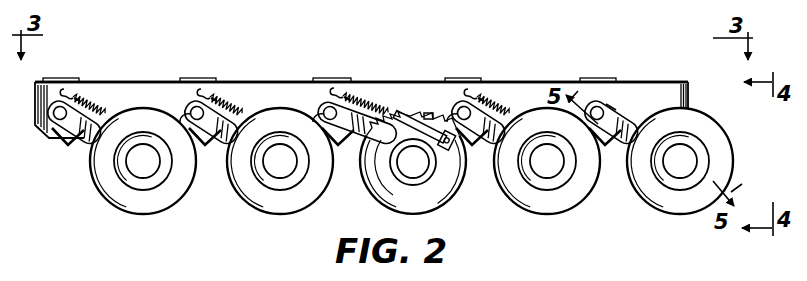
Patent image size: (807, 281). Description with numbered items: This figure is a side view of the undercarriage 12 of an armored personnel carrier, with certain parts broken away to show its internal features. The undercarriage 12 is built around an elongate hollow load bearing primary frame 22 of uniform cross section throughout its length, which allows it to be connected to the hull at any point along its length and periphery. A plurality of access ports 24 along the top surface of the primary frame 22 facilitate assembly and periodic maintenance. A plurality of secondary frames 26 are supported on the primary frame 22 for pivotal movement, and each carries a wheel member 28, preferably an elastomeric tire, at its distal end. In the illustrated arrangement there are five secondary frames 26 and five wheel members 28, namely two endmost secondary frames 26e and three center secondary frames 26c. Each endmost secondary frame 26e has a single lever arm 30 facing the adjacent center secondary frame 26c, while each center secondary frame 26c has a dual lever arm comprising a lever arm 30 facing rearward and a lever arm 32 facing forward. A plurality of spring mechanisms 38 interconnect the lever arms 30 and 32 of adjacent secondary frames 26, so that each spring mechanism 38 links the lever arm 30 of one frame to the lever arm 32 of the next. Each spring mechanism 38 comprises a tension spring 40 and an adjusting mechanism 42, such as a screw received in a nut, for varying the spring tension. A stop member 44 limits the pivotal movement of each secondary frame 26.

The undercarriage 12 is at (607, 54).
The primary frame 22 is at (642, 81).
The access ports 24 is at (71, 78).
The secondary frames 26 is at (85, 137).
The center secondary frames 26c is at (185, 118).
The endmost secondary frames 26e is at (49, 140).
The wheel member 28 is at (167, 204).
The lever arm 30 is at (77, 89).
The lever arm 32 is at (163, 128).
The spring mechanism 38 is at (109, 95).
The tension spring 40 is at (89, 97).
The adjusting mechanism 42 is at (421, 114).
The stop member 44 is at (431, 113).